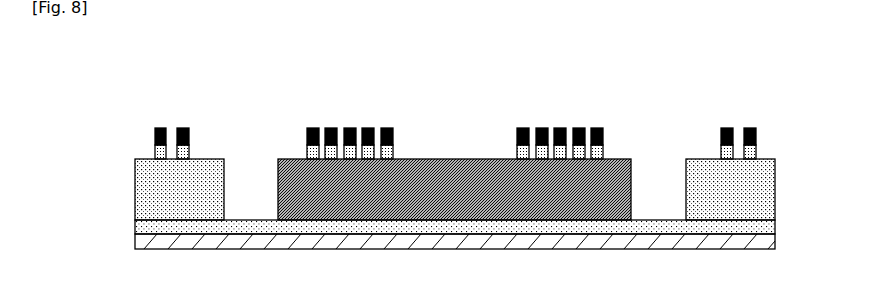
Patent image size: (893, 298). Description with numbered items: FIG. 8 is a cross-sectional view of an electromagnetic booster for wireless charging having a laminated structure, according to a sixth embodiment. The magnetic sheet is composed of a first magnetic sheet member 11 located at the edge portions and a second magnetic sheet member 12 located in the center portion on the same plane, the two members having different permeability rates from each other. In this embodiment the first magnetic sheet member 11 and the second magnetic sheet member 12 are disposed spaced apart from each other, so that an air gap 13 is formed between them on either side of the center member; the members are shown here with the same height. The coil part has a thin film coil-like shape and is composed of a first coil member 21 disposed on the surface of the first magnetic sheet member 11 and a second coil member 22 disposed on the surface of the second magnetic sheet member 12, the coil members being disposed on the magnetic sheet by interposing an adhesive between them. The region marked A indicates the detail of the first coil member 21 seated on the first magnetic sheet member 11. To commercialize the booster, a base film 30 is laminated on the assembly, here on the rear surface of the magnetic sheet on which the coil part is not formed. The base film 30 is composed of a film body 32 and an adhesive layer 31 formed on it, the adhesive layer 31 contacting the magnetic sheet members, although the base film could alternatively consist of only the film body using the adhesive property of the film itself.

The first magnetic sheet member 11 is at (180, 210).
The second magnetic sheet member 12 is at (455, 210).
The air gap 13 is at (249, 178).
The first coil member 21 is at (182, 127).
The second coil member 22 is at (594, 128).
The base film 30 is at (405, 246).
The adhesive layer 31 is at (135, 223).
The film body 32 is at (135, 240).
The region A is at (153, 150).